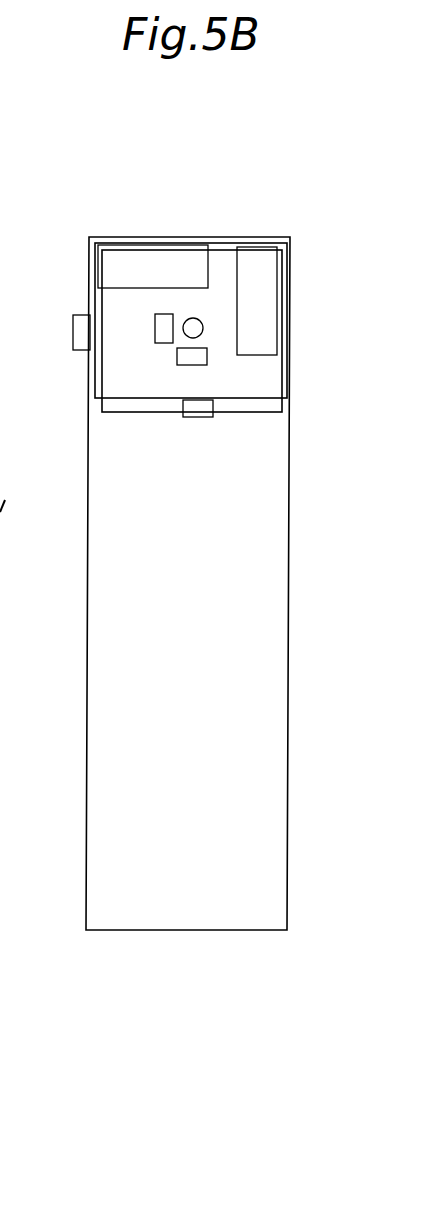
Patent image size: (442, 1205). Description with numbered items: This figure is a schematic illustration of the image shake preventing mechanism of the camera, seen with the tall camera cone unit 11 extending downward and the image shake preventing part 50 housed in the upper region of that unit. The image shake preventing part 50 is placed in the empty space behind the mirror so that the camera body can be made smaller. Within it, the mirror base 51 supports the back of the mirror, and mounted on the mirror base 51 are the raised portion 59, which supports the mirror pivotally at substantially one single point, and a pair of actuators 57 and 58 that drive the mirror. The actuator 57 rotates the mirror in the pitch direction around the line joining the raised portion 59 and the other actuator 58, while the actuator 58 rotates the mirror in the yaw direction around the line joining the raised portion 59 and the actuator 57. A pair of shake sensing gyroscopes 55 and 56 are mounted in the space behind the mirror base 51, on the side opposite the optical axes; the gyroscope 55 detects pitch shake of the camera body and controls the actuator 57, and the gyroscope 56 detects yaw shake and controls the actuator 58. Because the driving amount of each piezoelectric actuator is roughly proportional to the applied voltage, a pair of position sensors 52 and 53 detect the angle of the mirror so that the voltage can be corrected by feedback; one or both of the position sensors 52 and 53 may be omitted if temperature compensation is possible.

The camera cone unit 11 is at (165, 930).
The image shake preventing part 50 is at (212, 202).
The mirror base 51 is at (95, 372).
The position sensor 52 is at (197, 412).
The position sensor 53 is at (80, 334).
The shake sensing gyroscope 55 is at (148, 257).
The shake sensing gyroscope 56 is at (260, 258).
The actuator 57 is at (192, 366).
The actuator 58 is at (153, 330).
The raised portion 59 is at (202, 320).